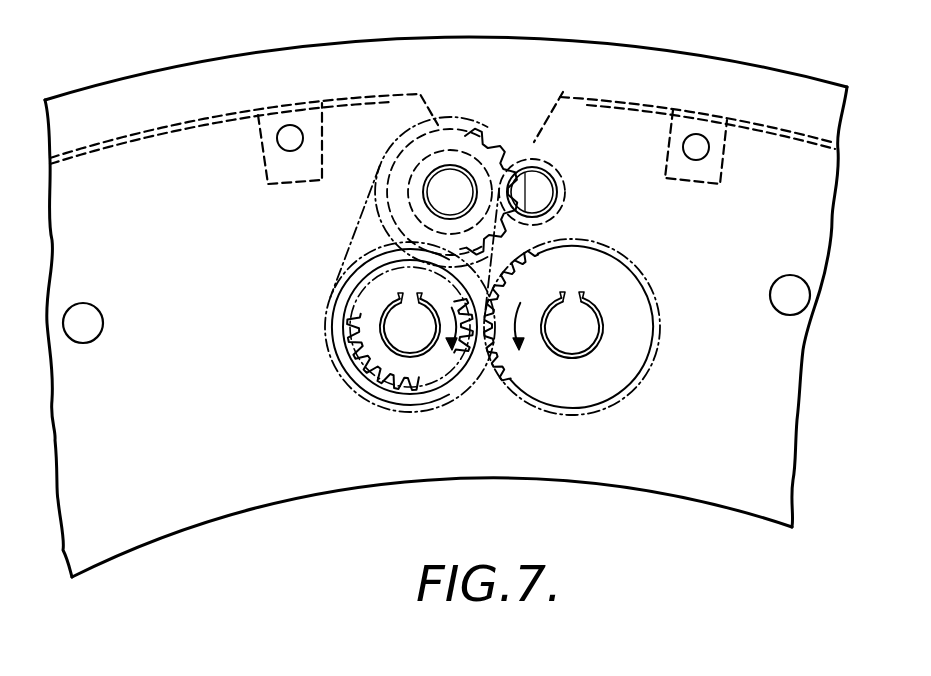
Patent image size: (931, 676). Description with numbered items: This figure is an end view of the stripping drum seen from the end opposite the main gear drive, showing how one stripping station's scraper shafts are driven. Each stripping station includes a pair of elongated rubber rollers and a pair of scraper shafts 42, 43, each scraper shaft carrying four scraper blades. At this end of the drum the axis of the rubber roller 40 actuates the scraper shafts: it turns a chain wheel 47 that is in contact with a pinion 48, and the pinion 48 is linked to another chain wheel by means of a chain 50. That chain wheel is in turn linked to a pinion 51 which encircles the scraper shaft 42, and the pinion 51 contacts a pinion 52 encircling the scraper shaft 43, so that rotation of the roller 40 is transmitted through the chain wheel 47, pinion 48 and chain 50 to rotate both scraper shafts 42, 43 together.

The rubber roller 40 is at (453, 190).
The scraper shaft 42 is at (409, 338).
The scraper shaft 43 is at (572, 338).
The chain wheel 47 is at (410, 203).
The pinion 48 is at (393, 192).
The chain 50 is at (392, 147).
The pinion 51 is at (352, 378).
The pinion 52 is at (528, 373).